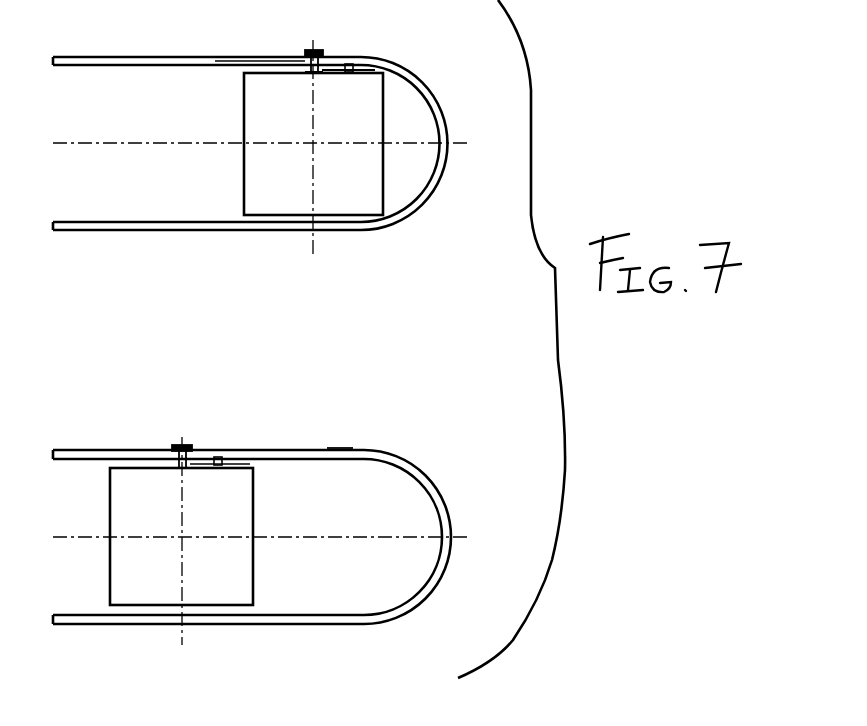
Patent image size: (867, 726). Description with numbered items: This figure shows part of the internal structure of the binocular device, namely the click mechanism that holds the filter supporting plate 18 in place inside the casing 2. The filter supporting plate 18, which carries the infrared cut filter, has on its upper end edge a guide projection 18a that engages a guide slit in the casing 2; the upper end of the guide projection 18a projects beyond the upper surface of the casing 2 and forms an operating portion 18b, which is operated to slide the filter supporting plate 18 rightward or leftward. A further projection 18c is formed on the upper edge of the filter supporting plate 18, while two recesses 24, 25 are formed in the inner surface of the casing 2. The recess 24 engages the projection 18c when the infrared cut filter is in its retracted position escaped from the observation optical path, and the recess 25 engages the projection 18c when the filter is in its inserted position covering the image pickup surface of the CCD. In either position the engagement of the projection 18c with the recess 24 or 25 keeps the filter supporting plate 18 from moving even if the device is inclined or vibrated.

The casing 2 is at (428, 80).
The filter supporting plate 18 is at (356, 216).
The guide projection 18a is at (296, 61).
The operating portion 18b is at (312, 54).
The projection 18c is at (372, 62).
The recess 24 is at (347, 62).
The recess 25 is at (213, 58).